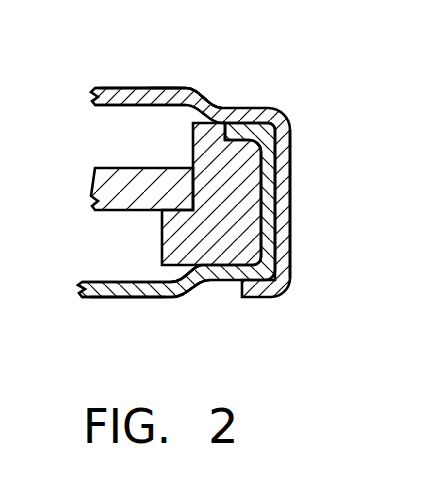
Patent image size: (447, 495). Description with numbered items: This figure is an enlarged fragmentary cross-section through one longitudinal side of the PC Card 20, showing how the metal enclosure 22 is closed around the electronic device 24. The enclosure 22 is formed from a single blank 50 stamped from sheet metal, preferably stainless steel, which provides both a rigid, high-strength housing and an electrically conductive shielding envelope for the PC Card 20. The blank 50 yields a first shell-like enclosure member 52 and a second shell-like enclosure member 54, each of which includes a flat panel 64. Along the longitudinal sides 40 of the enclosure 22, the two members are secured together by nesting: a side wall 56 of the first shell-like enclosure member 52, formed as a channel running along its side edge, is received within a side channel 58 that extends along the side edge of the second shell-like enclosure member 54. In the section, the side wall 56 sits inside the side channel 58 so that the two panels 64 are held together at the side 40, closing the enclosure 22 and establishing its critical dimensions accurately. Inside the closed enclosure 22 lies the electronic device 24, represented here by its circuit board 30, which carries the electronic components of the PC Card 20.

The PC Card 20 is at (204, 194).
The enclosure 22 is at (183, 298).
The electronic device 24 is at (107, 176).
The circuit board 30 is at (103, 212).
The longitudinal sides 40 is at (210, 162).
The blank 50 is at (103, 87).
The first shell-like enclosure member 52 is at (147, 300).
The second shell-like enclosure member 54 is at (173, 92).
The side wall 56 is at (208, 241).
The side channel 58 is at (291, 240).
The panel 64 is at (137, 87).